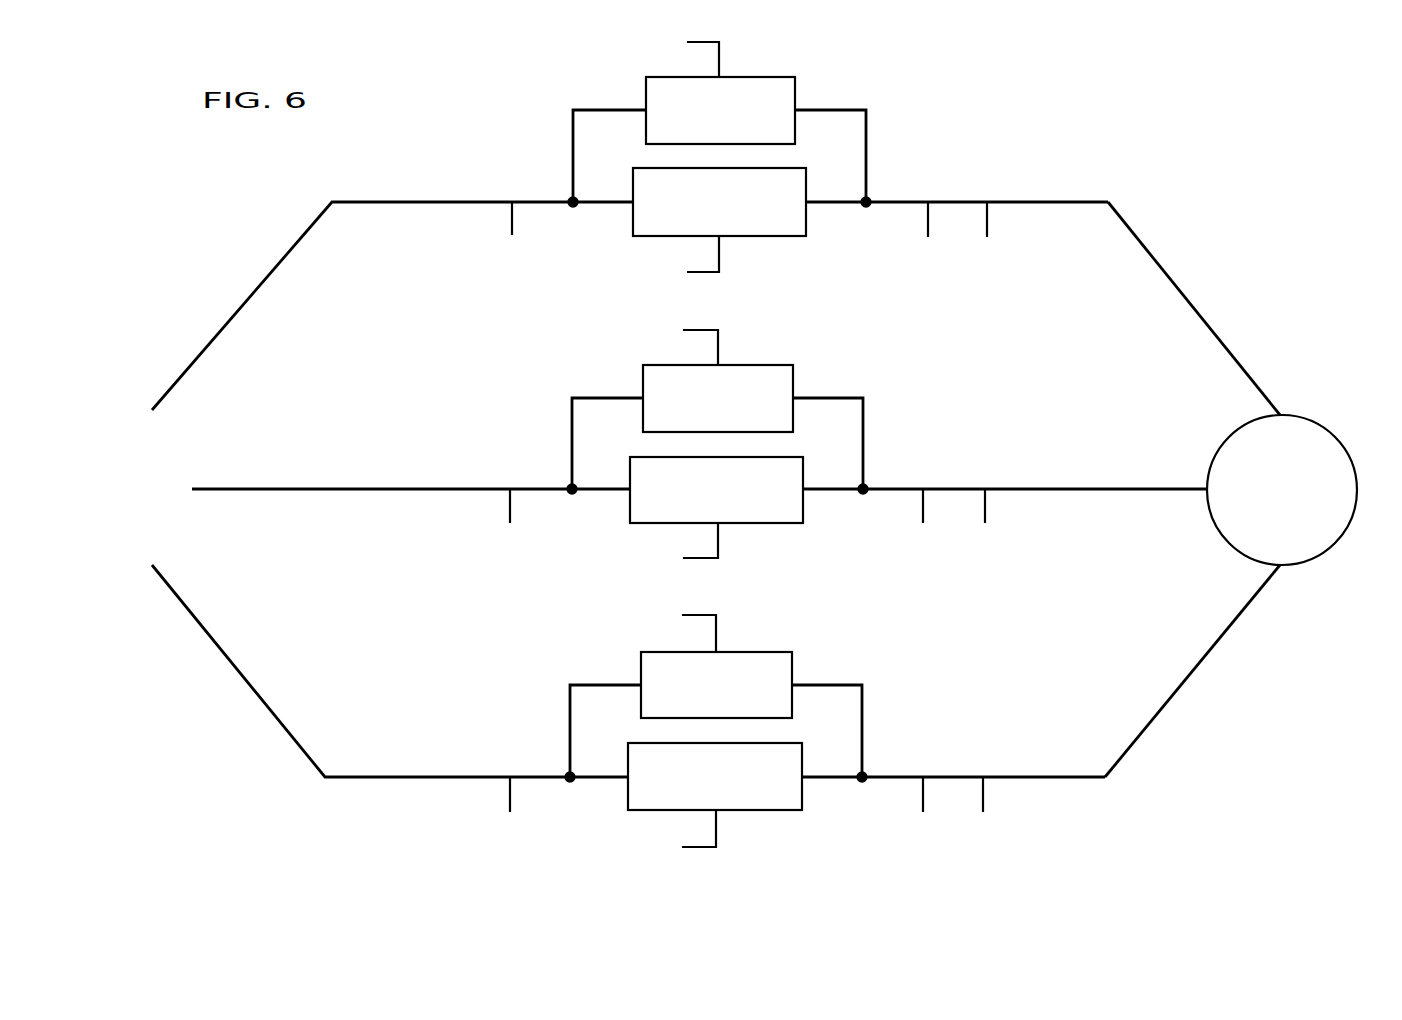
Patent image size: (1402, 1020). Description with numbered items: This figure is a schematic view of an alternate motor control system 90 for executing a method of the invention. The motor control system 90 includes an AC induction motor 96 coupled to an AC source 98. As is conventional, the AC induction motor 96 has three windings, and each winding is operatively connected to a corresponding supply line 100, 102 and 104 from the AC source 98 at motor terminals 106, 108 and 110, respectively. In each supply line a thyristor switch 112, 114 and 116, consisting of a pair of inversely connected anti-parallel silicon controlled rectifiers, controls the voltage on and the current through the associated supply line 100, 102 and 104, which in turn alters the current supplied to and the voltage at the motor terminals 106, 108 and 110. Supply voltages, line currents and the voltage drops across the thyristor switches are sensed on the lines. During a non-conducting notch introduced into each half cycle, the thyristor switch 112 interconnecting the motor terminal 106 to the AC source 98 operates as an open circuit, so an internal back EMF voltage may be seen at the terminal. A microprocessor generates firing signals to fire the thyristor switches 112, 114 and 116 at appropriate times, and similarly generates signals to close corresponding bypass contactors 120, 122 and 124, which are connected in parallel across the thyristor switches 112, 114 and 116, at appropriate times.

The motor control system 90 is at (1224, 226).
The AC induction motor 96 is at (1330, 427).
The AC source 98 is at (108, 478).
The supply line 100 is at (247, 298).
The supply line 102 is at (345, 488).
The supply line 104 is at (245, 678).
The motor terminal 106 is at (1280, 412).
The motor terminal 108 is at (1207, 488).
The motor terminal 110 is at (1280, 568).
The thyristor switch 112 is at (758, 237).
The thyristor switch 114 is at (752, 524).
The thyristor switch 116 is at (753, 811).
The bypass contactor 120 is at (748, 76).
The bypass contactor 122 is at (742, 364).
The bypass contactor 124 is at (752, 651).